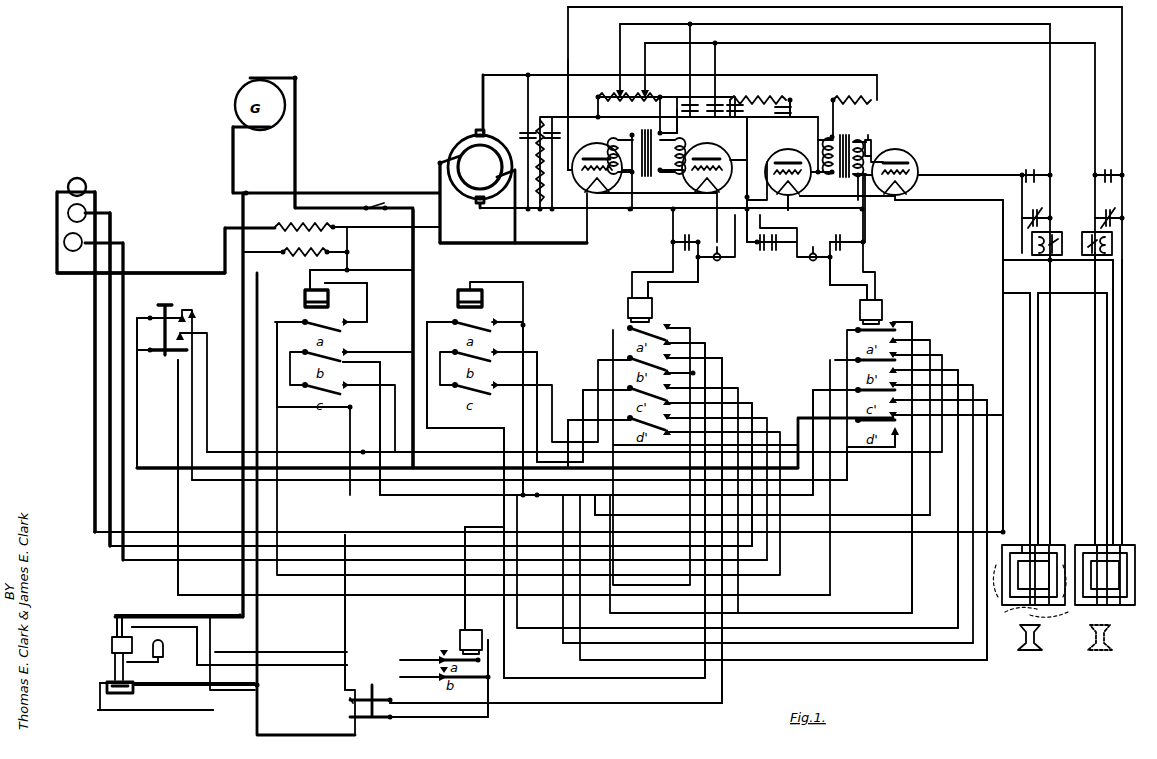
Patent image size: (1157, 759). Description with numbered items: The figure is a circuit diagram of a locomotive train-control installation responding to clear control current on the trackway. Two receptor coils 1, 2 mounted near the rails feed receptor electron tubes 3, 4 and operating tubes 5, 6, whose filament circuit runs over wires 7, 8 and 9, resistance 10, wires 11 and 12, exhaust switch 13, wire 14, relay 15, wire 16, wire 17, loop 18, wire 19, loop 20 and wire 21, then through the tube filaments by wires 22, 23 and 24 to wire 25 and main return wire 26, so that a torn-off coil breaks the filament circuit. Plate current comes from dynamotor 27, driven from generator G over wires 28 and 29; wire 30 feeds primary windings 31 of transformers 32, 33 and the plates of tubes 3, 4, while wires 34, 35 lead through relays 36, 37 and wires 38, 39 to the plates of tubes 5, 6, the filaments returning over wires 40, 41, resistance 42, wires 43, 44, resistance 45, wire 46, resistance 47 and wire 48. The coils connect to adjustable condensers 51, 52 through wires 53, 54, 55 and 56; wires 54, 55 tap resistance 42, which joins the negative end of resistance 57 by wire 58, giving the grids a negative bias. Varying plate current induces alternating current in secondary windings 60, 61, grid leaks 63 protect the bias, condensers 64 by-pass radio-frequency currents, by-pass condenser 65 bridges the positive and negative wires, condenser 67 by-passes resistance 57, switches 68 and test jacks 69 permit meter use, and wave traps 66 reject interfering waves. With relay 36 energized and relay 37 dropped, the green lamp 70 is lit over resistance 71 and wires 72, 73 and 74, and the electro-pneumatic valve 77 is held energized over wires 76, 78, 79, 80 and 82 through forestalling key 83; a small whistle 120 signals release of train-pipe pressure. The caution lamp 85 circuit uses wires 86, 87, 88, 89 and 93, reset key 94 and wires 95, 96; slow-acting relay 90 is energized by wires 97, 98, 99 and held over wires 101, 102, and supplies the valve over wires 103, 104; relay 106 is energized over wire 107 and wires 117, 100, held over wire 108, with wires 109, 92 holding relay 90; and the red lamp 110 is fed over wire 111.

The receptor coil 1 is at (1022, 605).
The receptor coil 2 is at (1112, 606).
The receptor electron tube 3 is at (899, 152).
The receptor electron tube 4 is at (597, 150).
The operating tube 5 is at (788, 150).
The operating tube 6 is at (710, 150).
The wire 7 is at (230, 165).
The wire 8 is at (392, 232).
The wire 9 is at (348, 252).
The resistance 10 is at (306, 256).
The wire 11 is at (275, 298).
The wire 12 is at (194, 684).
The exhaust switch 13 is at (111, 708).
The wire 14 is at (166, 711).
The relay 15 is at (461, 590).
The wire 16 is at (489, 691).
The wire 17 is at (1001, 316).
The loop 18 is at (1052, 545).
The wire 19 is at (1102, 396).
The loop 20 is at (1122, 540).
The wire 21 is at (1002, 233).
The wire 22 is at (847, 187).
The wire 23 is at (780, 200).
The wire 24 is at (657, 184).
The wire 25 is at (500, 250).
The main return wire 26 is at (298, 113).
The dynamotor 27 is at (477, 159).
The wire 28 is at (437, 176).
The wire 29 is at (515, 229).
The wire 30 is at (610, 212).
The primary winding 31 is at (862, 140).
The transformer 32 is at (843, 135).
The transformer 33 is at (648, 145).
The wire 34 is at (864, 233).
The wire 35 is at (673, 240).
The relay 36 is at (871, 312).
The relay 37 is at (640, 310).
The wire 38 is at (843, 287).
The wire 39 is at (697, 282).
The wire 40 is at (748, 150).
The wire 41 is at (694, 122).
The resistance 42 is at (611, 97).
The wire 43 is at (655, 108).
The wire 44 is at (677, 98).
The resistance 45 is at (758, 99).
The wire 46 is at (792, 99).
The resistance 47 is at (858, 99).
The wire 48 is at (545, 75).
The adjustable condenser 51 is at (1036, 210).
The adjustable condenser 52 is at (1108, 210).
The wire 53 is at (956, 174).
The wire 54 is at (618, 25).
The wire 55 is at (645, 52).
The wire 56 is at (566, 23).
The resistance 57 is at (539, 122).
The wire 58 is at (584, 116).
The secondary winding 60 is at (822, 140).
The secondary winding 61 is at (682, 118).
The grid leak 63 is at (636, 170).
The condenser 64 is at (765, 268).
The by-pass condenser 65 is at (521, 131).
The wave trap 66 is at (1032, 247).
The condenser 67 is at (562, 135).
The small switch 68 is at (872, 142).
The test jack 69 is at (812, 262).
The green signal lamp 70 is at (86, 186).
The resistance 71 is at (297, 224).
The wire 72 is at (160, 273).
The wire 73 is at (90, 384).
The wire 74 is at (584, 392).
The wire 76 is at (242, 393).
The electro-pneumatic valve 77 is at (121, 635).
The wire 78 is at (285, 662).
The wire 79 is at (712, 590).
The wire 80 is at (866, 617).
The wire 82 is at (438, 503).
The forestalling key 83 is at (165, 355).
The yellow caution lamp 85 is at (86, 211).
The wire 86 is at (108, 323).
The wire 87 is at (560, 520).
The wire 88 is at (392, 503).
The wire 89 is at (538, 364).
The relay 90 is at (483, 299).
The wire 92 is at (314, 413).
The wire 93 is at (440, 410).
The reset key 94 is at (385, 695).
The wire 95 is at (557, 706).
The wire 96 is at (860, 450).
The wire 97 is at (396, 272).
The wire 98 is at (525, 330).
The wire 99 is at (192, 487).
The wire 100 is at (310, 455).
The wire 101 is at (424, 341).
The wire 102 is at (660, 514).
The wire 103 is at (505, 642).
The wire 104 is at (569, 418).
The relay 106 is at (330, 299).
The wire 107 is at (309, 282).
The wire 108 is at (276, 510).
The wire 109 is at (374, 421).
The red lamp 110 is at (70, 248).
The wire 111 is at (124, 415).
The wire 117 is at (369, 350).
The small whistle 120 is at (173, 650).